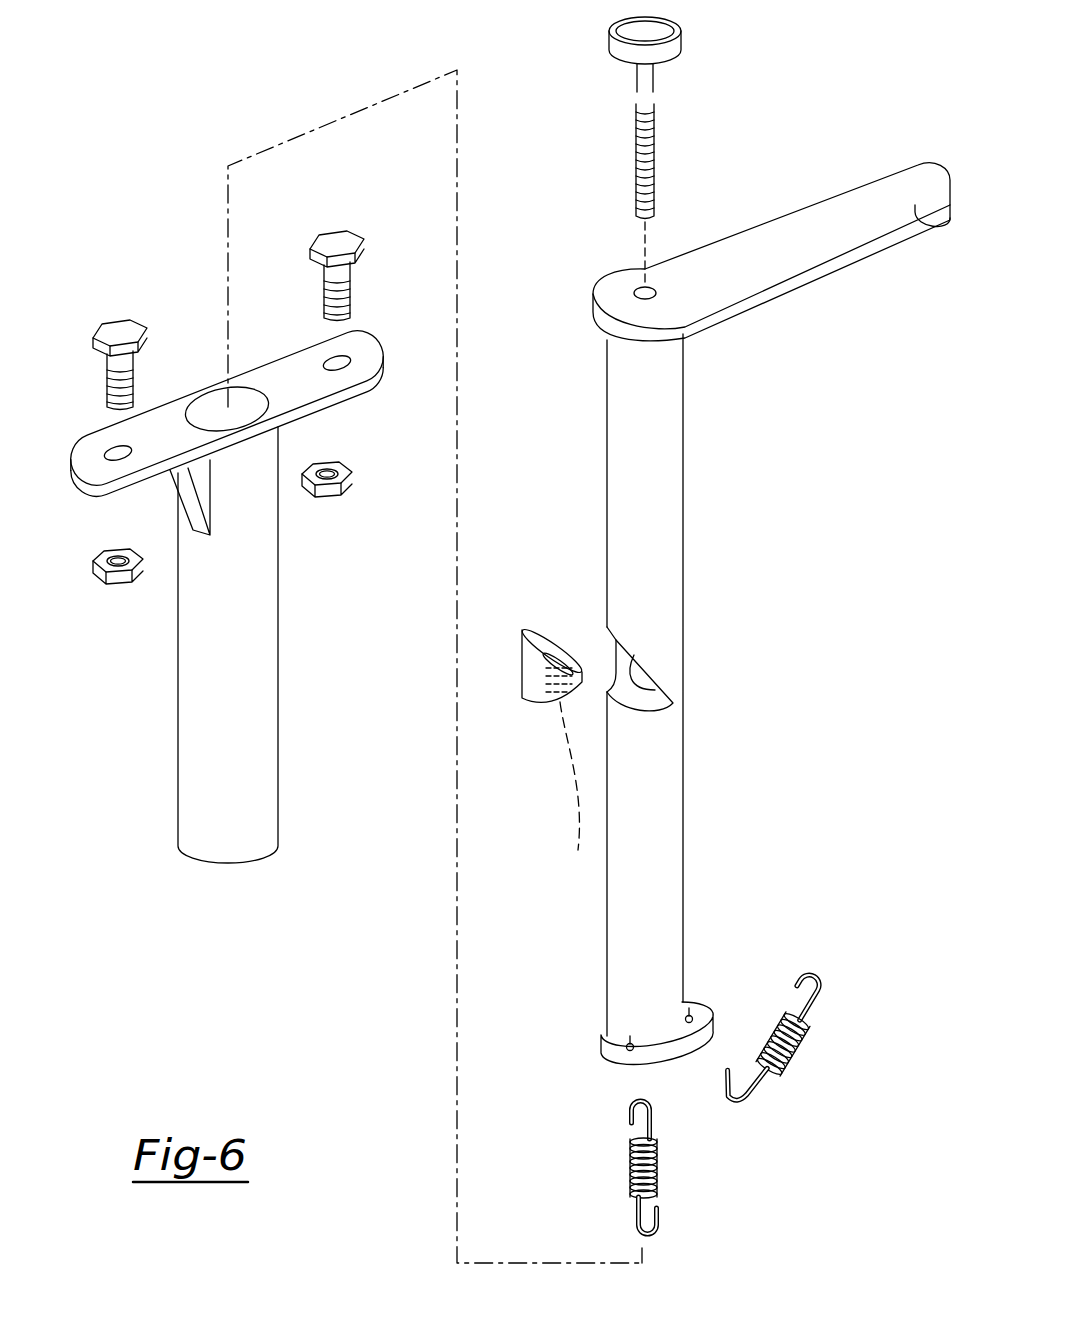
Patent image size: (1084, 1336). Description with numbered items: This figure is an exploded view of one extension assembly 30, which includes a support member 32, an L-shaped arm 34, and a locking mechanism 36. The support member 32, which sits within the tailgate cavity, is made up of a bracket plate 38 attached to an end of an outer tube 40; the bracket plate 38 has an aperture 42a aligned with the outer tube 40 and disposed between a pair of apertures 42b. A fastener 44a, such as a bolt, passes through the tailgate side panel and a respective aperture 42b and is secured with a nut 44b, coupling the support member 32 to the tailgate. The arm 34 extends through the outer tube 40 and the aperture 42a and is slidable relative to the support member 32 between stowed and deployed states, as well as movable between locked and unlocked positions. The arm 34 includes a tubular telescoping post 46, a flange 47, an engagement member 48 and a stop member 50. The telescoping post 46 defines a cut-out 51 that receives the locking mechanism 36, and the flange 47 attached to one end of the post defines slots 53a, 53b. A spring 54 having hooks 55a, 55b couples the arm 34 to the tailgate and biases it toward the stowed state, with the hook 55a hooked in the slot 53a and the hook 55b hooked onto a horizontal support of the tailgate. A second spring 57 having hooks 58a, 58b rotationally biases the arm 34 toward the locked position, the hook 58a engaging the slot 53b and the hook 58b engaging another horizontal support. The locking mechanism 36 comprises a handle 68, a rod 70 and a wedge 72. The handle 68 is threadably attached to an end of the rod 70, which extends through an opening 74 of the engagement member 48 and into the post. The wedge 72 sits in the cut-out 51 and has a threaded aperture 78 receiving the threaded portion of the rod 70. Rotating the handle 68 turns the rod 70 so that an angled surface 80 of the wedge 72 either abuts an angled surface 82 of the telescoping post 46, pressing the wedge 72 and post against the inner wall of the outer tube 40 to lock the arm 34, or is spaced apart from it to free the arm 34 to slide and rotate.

The extension assembly 30 is at (768, 84).
The support member 32 is at (164, 723).
The L-shaped arm 34 is at (724, 208).
The locking mechanism 36 is at (604, 33).
The bracket plate 38 is at (278, 370).
The outer tube 40 is at (252, 722).
The aperture 42a is at (208, 405).
The apertures 42b is at (110, 452).
The fastener 44a is at (107, 330).
The nut 44b is at (140, 577).
The telescoping post 46 is at (667, 542).
The flange 47 is at (712, 1027).
The engagement member 48 is at (822, 217).
The stop member 50 is at (932, 224).
The cut-out 51 is at (610, 651).
The slot 53a is at (630, 1034).
The slot 53b is at (689, 1006).
The spring 54 is at (662, 1167).
The hook 55a is at (583, 1109).
The hook 55b is at (704, 1222).
The spring 57 is at (802, 1051).
The hook 58a is at (745, 1100).
The hook 58b is at (820, 990).
The handle 68 is at (679, 55).
The rod 70 is at (647, 128).
The wedge 72 is at (527, 683).
The opening 74 is at (639, 288).
The threaded aperture 78 is at (571, 788).
The angled surface 80 is at (540, 641).
The angled surface 82 is at (634, 657).